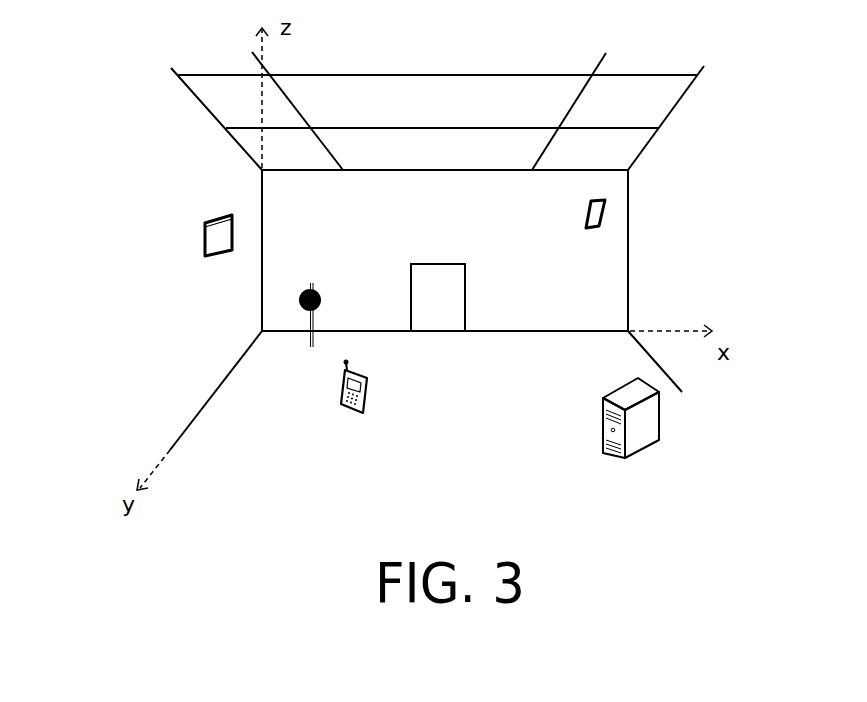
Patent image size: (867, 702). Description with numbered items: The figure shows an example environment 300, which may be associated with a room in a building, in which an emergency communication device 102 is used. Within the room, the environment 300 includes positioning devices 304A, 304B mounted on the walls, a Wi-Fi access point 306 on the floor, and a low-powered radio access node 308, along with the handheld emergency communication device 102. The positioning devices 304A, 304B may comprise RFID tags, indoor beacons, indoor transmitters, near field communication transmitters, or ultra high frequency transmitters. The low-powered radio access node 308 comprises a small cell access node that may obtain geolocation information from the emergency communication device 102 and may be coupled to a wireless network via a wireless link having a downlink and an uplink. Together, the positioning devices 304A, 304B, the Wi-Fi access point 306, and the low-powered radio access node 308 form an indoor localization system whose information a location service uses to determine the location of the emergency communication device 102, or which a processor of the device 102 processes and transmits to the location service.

The example environment 300 is at (103, 143).
The positioning device 304A is at (213, 258).
The positioning device 304B is at (590, 230).
The low-powered radio access node 308 is at (323, 308).
The emergency communication device 102 is at (352, 414).
The Wi-Fi access point 306 is at (603, 424).